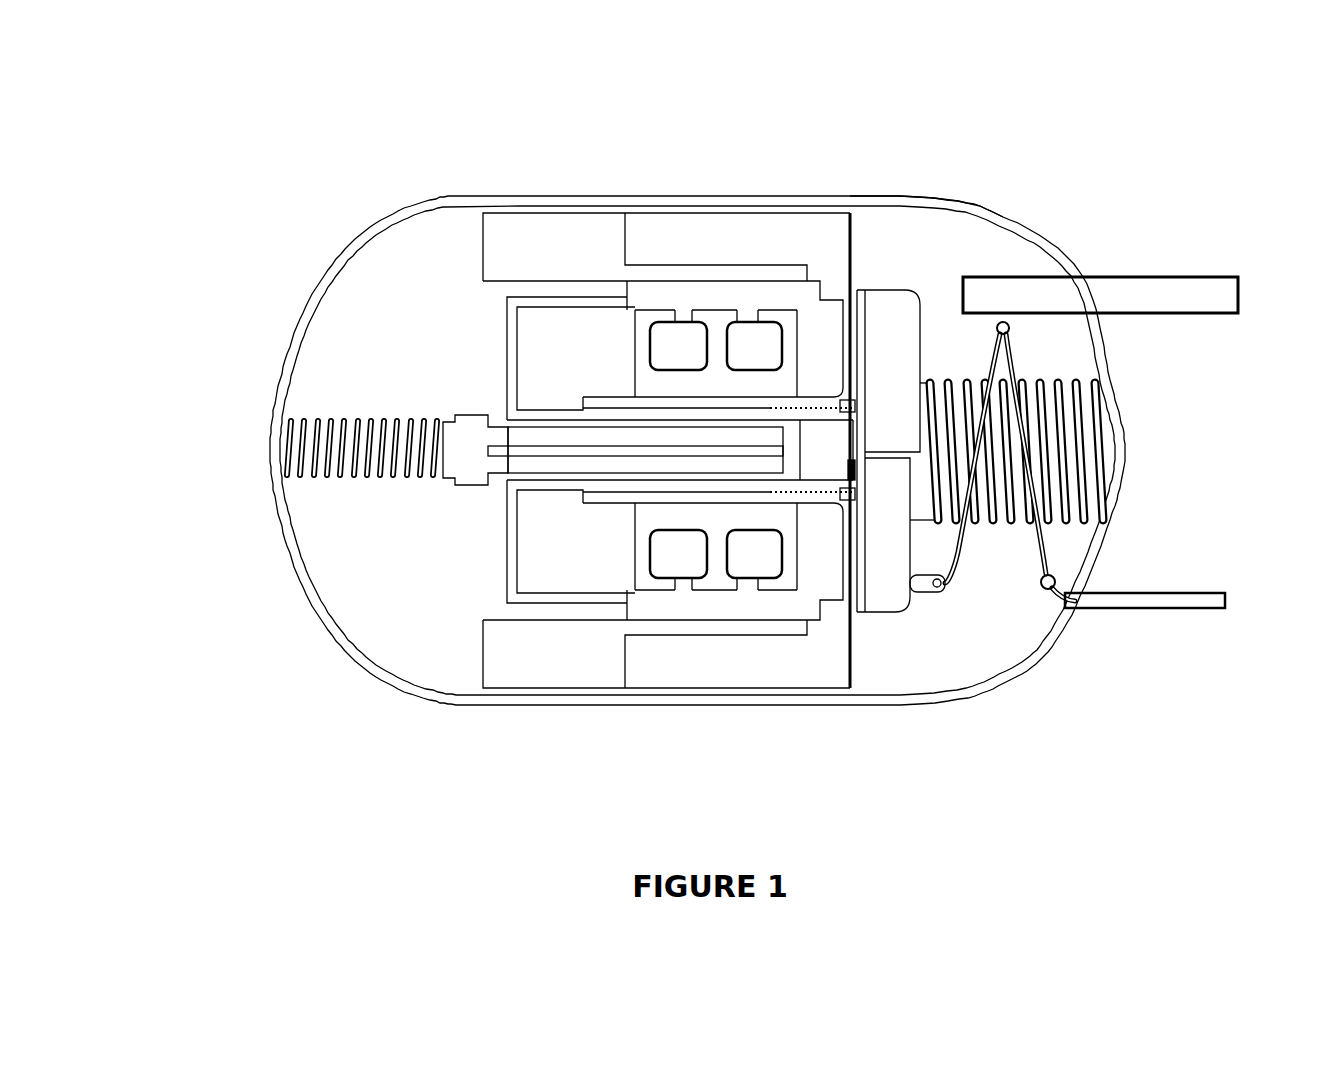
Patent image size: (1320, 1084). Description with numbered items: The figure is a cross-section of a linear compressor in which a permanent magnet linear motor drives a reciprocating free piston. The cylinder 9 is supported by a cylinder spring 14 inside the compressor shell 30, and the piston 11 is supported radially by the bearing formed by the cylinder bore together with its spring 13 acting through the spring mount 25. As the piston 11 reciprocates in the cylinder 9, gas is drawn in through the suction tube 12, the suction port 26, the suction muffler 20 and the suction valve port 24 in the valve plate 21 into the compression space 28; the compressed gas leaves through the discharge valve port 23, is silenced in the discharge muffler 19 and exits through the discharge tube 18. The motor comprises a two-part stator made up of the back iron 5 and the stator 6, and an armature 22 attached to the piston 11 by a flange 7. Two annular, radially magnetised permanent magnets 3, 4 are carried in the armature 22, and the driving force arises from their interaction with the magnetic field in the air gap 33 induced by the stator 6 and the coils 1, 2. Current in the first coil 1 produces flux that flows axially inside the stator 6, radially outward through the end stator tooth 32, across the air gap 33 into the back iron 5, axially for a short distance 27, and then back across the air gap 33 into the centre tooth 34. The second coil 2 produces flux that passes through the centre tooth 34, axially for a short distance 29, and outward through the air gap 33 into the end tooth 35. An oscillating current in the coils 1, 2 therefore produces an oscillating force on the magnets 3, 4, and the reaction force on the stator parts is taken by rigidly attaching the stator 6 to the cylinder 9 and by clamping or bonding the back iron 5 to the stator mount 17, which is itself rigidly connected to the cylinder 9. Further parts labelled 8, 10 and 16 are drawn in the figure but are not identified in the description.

The coil 1 is at (679, 338).
The coil 2 is at (730, 290).
The permanent magnet 3 is at (655, 290).
The permanent magnet 4 is at (750, 338).
The back iron 5 is at (627, 263).
The stator 6 is at (630, 325).
The flange 7 is at (510, 600).
The seal 8 is at (822, 407).
The cylinder 9 is at (808, 395).
The stop 10 is at (855, 405).
The piston 11 is at (510, 490).
The suction tube 12 is at (1125, 277).
The spring 13 is at (345, 478).
The cylinder spring 14 is at (993, 530).
The seal 16 is at (855, 492).
The stator mount 17 is at (535, 205).
The discharge tube 18 is at (957, 585).
The discharge muffler 19 is at (895, 598).
The suction muffler 20 is at (895, 318).
The valve plate 21 is at (858, 615).
The armature 22 is at (653, 605).
The discharge valve port 23 is at (866, 462).
The suction valve port 24 is at (523, 440).
The spring mount 25 is at (455, 415).
The suction port 26 is at (920, 323).
The short distance 27 is at (650, 617).
The compression space 28 is at (813, 473).
The short distance 29 is at (723, 627).
The compressor shell 30 is at (900, 197).
The end stator tooth 32 is at (632, 540).
The air gap 33 is at (792, 610).
The centre tooth 34 is at (703, 587).
The end tooth 35 is at (770, 585).